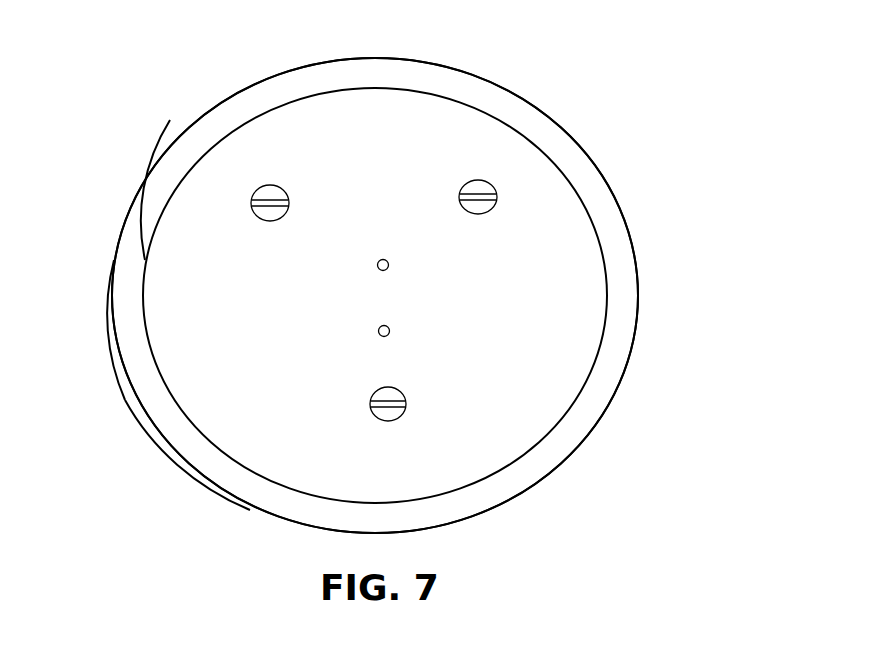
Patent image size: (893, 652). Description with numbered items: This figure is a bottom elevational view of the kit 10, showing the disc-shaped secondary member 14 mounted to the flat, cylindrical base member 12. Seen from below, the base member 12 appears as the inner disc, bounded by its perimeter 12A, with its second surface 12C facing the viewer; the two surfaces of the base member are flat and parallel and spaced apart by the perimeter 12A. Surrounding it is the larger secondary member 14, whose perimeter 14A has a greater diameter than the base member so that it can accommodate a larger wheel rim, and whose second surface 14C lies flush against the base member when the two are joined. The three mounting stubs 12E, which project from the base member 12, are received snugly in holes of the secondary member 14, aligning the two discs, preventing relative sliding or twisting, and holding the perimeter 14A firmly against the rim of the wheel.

The kit 10 is at (605, 93).
The base member 12 is at (595, 382).
The perimeter 12A is at (168, 205).
The second surface 12C is at (331, 298).
The mounting stubs 12E is at (268, 186).
The secondary member 14 is at (620, 178).
The perimeter 14A is at (183, 458).
The second surface 14C is at (140, 362).